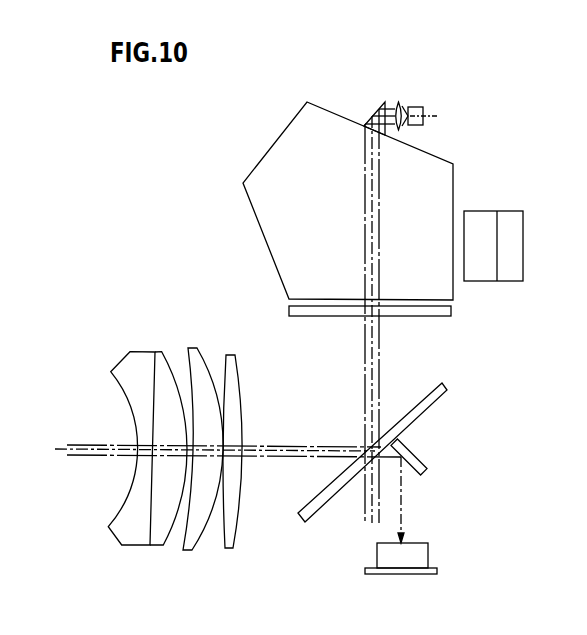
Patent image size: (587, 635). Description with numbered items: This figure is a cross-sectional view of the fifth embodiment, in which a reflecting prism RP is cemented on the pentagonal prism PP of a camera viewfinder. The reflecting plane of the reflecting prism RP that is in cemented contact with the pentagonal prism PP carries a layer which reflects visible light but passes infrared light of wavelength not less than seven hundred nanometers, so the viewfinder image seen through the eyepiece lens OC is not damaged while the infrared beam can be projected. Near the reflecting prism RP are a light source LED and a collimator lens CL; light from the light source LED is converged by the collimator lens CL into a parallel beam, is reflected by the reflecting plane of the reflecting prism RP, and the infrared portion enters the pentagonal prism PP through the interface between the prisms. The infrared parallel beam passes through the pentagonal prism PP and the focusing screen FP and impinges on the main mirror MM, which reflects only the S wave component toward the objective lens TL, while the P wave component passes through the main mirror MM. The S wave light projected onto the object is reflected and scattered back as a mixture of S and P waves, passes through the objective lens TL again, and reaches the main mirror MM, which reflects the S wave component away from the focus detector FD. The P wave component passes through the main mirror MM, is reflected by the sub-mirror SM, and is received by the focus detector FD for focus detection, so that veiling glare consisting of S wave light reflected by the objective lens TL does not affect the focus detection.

The pentagonal prism PP is at (261, 160).
The reflecting prism RP is at (372, 116).
The collimator lens CL is at (397, 108).
The light source LED is at (422, 107).
The eyepiece lens OC is at (488, 210).
The focusing screen FP is at (289, 306).
The objective lens TL is at (158, 352).
The main mirror MM is at (453, 371).
The sub-mirror SM is at (424, 468).
The focus detector FD is at (425, 550).